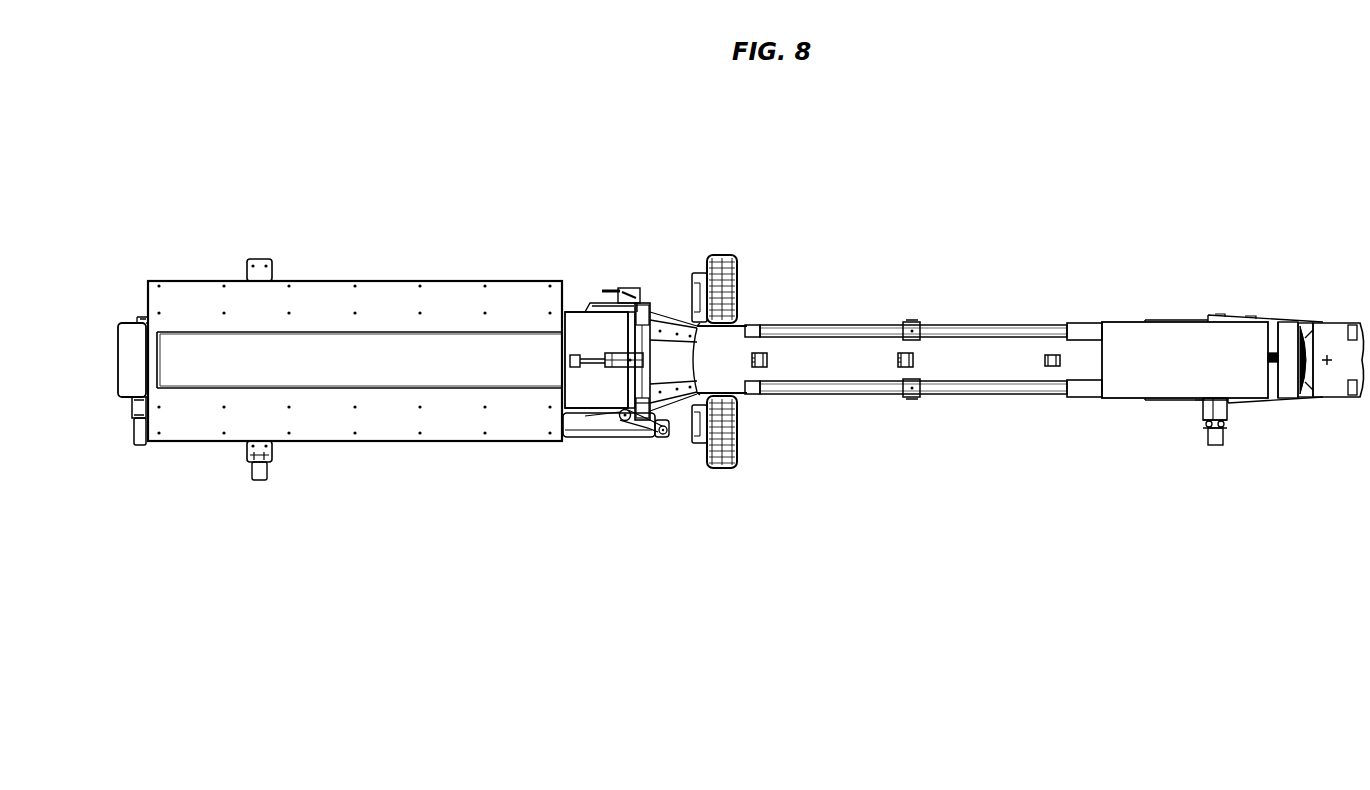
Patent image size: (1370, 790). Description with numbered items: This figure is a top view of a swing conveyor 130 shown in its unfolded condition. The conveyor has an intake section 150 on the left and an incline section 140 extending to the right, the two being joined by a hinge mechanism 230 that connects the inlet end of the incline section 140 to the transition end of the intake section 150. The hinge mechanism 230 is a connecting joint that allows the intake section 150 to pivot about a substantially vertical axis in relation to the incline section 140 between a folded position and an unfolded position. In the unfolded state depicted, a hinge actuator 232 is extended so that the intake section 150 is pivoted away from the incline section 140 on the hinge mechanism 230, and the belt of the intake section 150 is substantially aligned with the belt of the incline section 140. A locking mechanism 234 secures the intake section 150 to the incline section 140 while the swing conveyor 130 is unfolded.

The swing conveyor 130 is at (855, 600).
The incline section 140 is at (1028, 434).
The intake section 150 is at (402, 492).
The hinge mechanism 230 is at (641, 420).
The hinge actuator 232 is at (599, 432).
The locking mechanism 234 is at (626, 299).